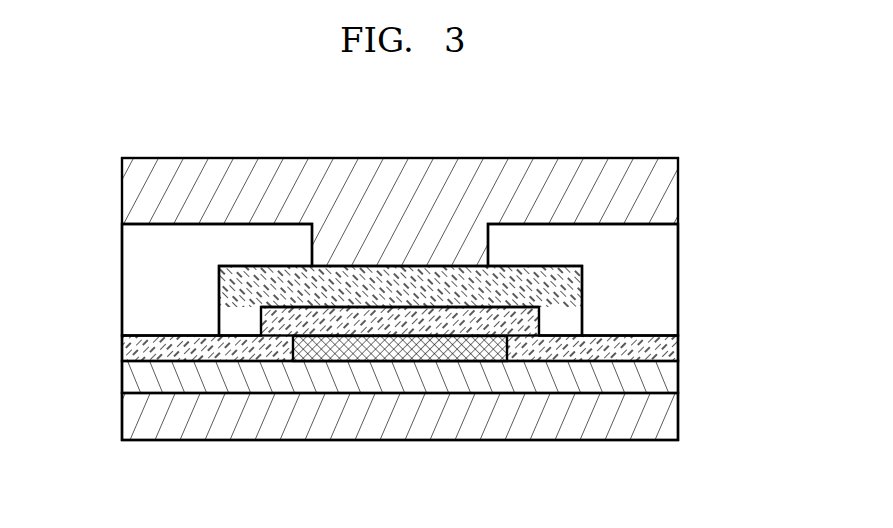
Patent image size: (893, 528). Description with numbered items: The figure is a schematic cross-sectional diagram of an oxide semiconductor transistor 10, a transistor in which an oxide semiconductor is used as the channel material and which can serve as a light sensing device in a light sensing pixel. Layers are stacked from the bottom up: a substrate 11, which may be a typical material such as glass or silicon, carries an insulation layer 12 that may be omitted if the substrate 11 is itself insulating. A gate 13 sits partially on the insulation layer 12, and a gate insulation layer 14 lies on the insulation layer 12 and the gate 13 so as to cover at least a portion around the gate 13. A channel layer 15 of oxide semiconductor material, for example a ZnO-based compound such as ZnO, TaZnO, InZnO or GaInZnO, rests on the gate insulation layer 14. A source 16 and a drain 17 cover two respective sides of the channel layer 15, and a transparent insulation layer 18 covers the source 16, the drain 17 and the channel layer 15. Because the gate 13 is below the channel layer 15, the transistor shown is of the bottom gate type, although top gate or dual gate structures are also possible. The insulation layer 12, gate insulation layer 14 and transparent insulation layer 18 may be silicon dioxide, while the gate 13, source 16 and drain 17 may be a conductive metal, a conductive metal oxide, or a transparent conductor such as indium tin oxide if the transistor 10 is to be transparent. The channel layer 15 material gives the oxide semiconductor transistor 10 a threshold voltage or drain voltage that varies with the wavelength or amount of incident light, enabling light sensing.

The oxide semiconductor transistor 10 is at (73, 416).
The substrate 11 is at (678, 418).
The insulation layer 12 is at (678, 380).
The gate 13 is at (397, 361).
The gate insulation layer 14 is at (678, 351).
The channel layer 15 is at (401, 280).
The source 16 is at (123, 282).
The drain 17 is at (678, 282).
The transparent insulation layer 18 is at (678, 193).